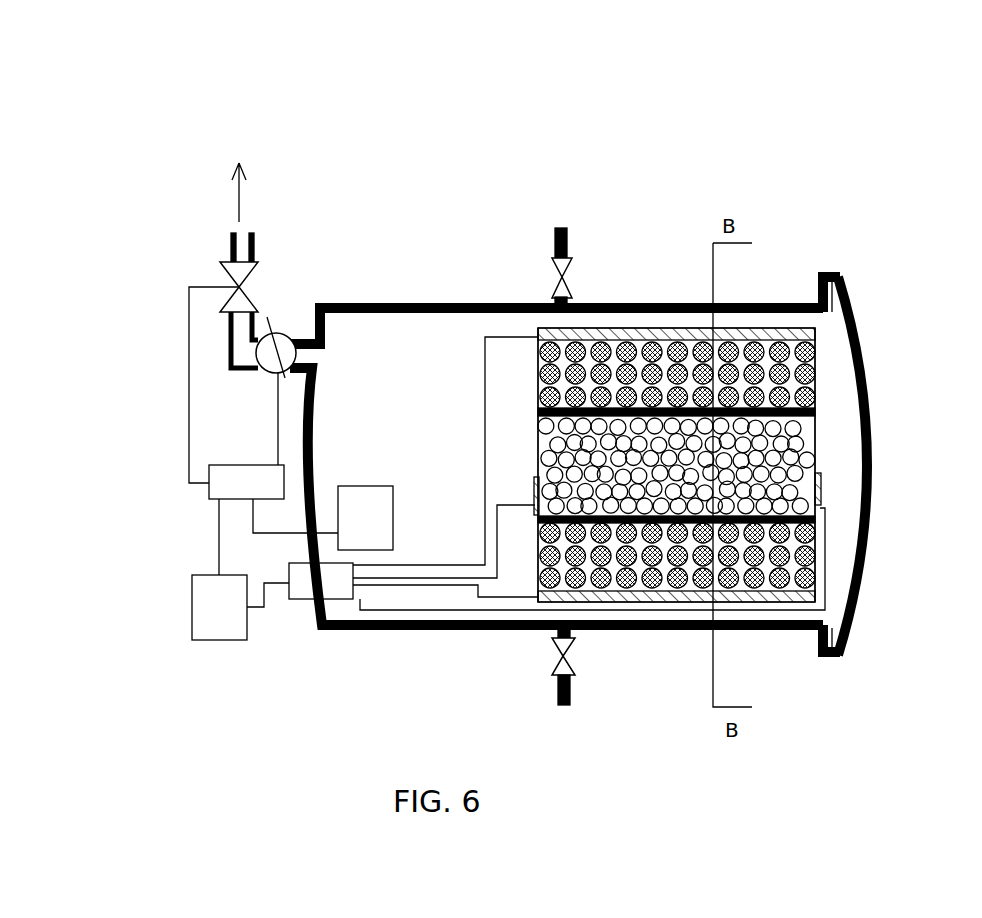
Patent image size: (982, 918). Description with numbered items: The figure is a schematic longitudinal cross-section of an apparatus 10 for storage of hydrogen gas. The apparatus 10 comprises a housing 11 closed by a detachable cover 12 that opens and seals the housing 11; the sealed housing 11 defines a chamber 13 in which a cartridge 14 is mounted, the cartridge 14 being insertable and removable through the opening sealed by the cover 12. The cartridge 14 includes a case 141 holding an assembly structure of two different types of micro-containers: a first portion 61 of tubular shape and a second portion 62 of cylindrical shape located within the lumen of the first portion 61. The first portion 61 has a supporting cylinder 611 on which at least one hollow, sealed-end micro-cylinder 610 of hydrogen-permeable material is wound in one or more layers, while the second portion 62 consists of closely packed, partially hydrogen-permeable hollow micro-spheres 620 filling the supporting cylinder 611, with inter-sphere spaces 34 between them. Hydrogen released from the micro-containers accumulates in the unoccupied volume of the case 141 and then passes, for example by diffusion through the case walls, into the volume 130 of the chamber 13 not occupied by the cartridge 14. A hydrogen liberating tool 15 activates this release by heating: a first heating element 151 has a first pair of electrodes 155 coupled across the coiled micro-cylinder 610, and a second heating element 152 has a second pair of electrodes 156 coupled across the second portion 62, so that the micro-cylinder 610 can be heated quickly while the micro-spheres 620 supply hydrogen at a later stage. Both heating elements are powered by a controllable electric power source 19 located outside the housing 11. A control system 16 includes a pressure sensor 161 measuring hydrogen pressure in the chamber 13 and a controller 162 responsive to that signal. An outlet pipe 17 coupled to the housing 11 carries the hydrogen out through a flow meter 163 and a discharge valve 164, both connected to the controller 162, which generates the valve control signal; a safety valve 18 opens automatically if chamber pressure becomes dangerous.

The apparatus 10 is at (814, 205).
The housing 11 is at (637, 303).
The detachable cover 12 is at (872, 437).
The chamber 13 is at (417, 550).
The cartridge 14 is at (659, 439).
The case 141 is at (773, 333).
The hydrogen liberating tool 15 is at (465, 374).
The first heating element 151 is at (531, 349).
The second heating element 152 is at (525, 489).
The first pair of electrodes 155 is at (547, 326).
The second pair of electrodes 156 is at (821, 482).
The control system 16 is at (191, 502).
The pressure sensor 161 is at (385, 532).
The controller 162 is at (266, 494).
The flow meter 163 is at (283, 334).
The discharge valve 164 is at (245, 287).
The outlet pipe 17 is at (238, 368).
The safety valve 18 is at (572, 655).
The controllable electric power source 19 is at (232, 620).
The inter-sphere spaces 34 is at (821, 505).
The first portion 61 is at (825, 343).
The second portion 62 is at (829, 437).
The micro-cylinder 610 is at (686, 600).
The supporting cylinder 611 is at (612, 337).
The micro-spheres 620 is at (798, 603).
The volume 130 is at (366, 358).